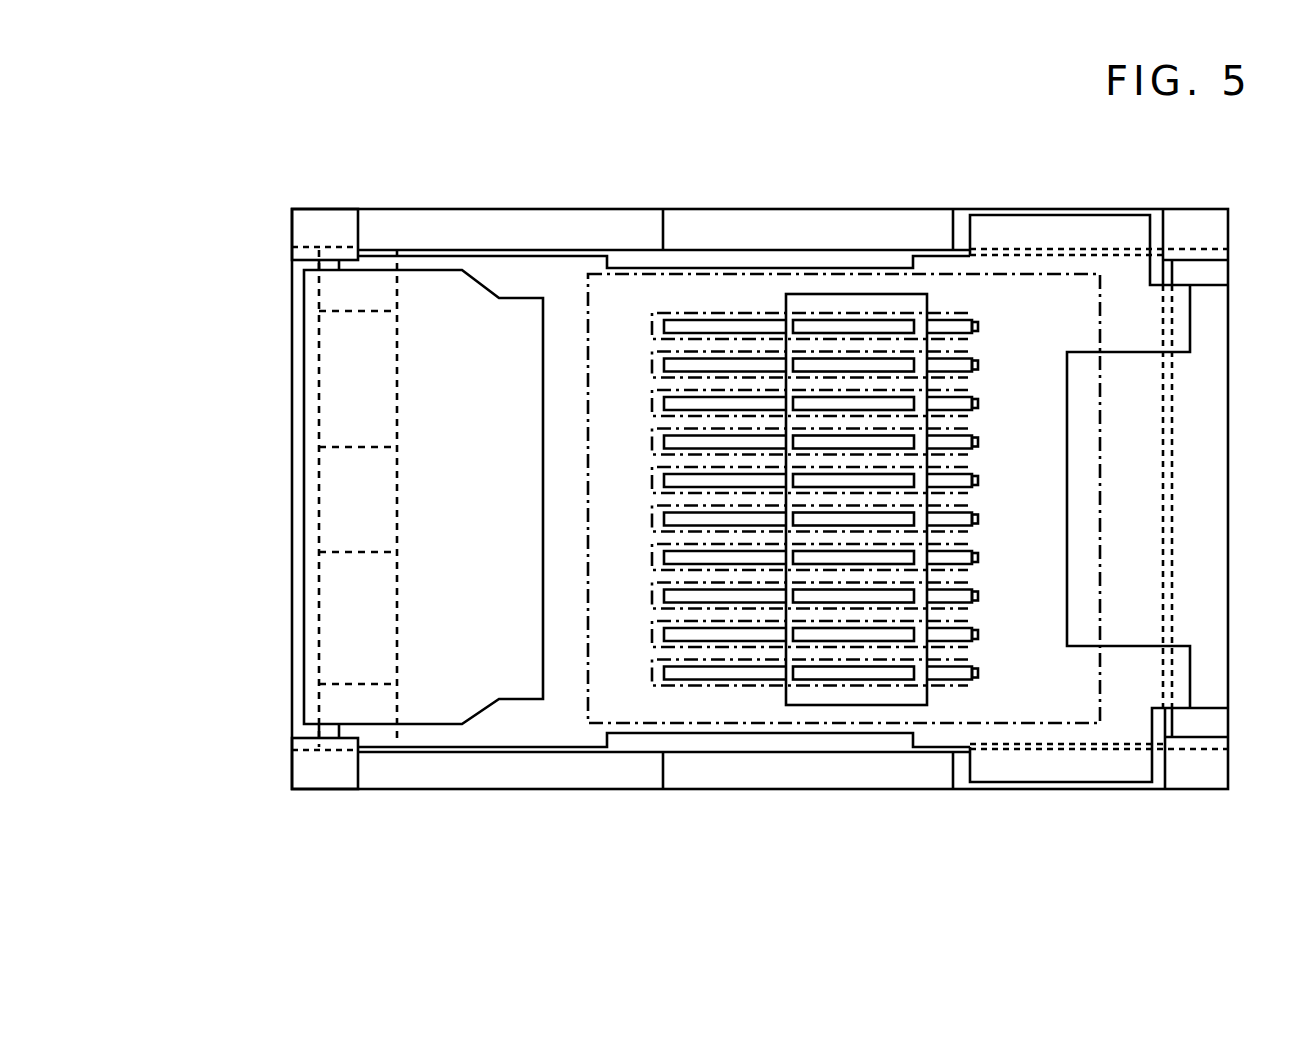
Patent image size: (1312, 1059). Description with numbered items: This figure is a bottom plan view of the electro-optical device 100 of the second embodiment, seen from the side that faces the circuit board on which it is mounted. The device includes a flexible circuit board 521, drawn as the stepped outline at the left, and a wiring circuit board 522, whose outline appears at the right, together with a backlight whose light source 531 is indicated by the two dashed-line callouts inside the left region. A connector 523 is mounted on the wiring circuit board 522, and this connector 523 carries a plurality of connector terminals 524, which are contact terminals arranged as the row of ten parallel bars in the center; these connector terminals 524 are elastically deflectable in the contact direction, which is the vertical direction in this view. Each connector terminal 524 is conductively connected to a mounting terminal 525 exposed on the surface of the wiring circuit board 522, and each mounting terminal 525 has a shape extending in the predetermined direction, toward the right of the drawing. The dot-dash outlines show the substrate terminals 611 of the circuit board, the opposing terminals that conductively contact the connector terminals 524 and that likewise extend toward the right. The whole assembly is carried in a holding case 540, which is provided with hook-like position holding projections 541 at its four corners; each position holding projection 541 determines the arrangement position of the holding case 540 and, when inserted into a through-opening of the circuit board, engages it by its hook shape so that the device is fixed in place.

The liquid ejecting head 100 is at (840, 132).
The flexible circuit board 521 is at (300, 531).
The wiring circuit board 522 is at (1050, 236).
The connector 523 is at (878, 700).
The connector terminal 524 is at (803, 673).
The mounting terminal 525 is at (664, 482).
The light source 531 is at (380, 395).
The holding case 540 is at (597, 226).
The position holding projection 541 is at (298, 228).
The substrate terminal 611 is at (680, 312).